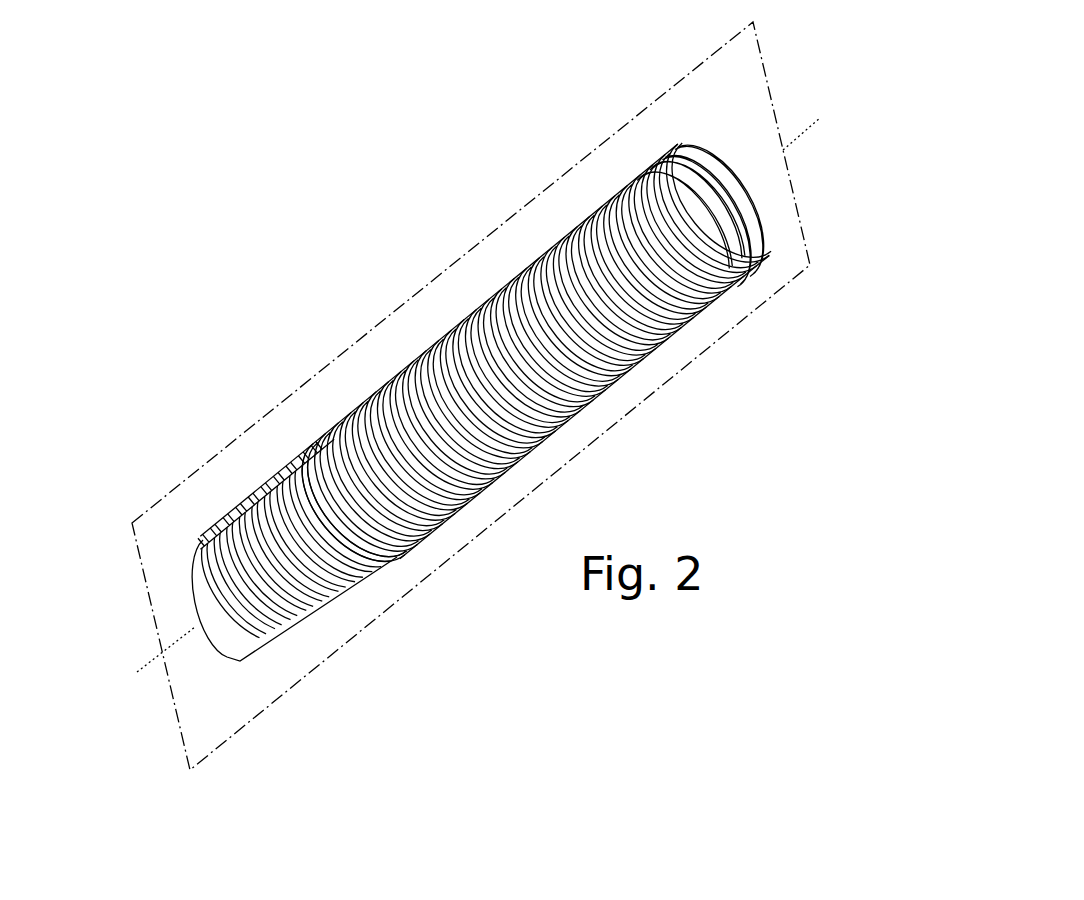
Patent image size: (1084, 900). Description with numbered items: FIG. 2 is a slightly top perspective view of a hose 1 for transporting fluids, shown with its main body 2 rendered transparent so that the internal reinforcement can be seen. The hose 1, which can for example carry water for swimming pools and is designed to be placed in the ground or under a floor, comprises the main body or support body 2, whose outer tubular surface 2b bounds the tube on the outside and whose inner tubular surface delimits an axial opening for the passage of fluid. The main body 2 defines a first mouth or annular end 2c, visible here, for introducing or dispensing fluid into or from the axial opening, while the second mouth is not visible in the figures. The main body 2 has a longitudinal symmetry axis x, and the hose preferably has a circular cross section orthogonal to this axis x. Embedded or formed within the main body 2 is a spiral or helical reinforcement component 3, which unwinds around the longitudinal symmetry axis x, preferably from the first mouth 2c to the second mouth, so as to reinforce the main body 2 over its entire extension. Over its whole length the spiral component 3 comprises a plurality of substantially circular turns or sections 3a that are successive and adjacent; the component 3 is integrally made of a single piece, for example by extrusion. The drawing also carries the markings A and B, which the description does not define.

The hose 1 is at (422, 350).
The main body 2 is at (263, 657).
The outer tubular surface 2b is at (398, 555).
The first mouth or annular end 2c is at (185, 595).
The spiral or helical reinforcement component 3 is at (262, 483).
The substantially circular turns or sections 3a is at (380, 397).
The section plane A is at (752, 73).
The view direction B is at (243, 28).
The longitudinal symmetry axis x is at (477, 392).